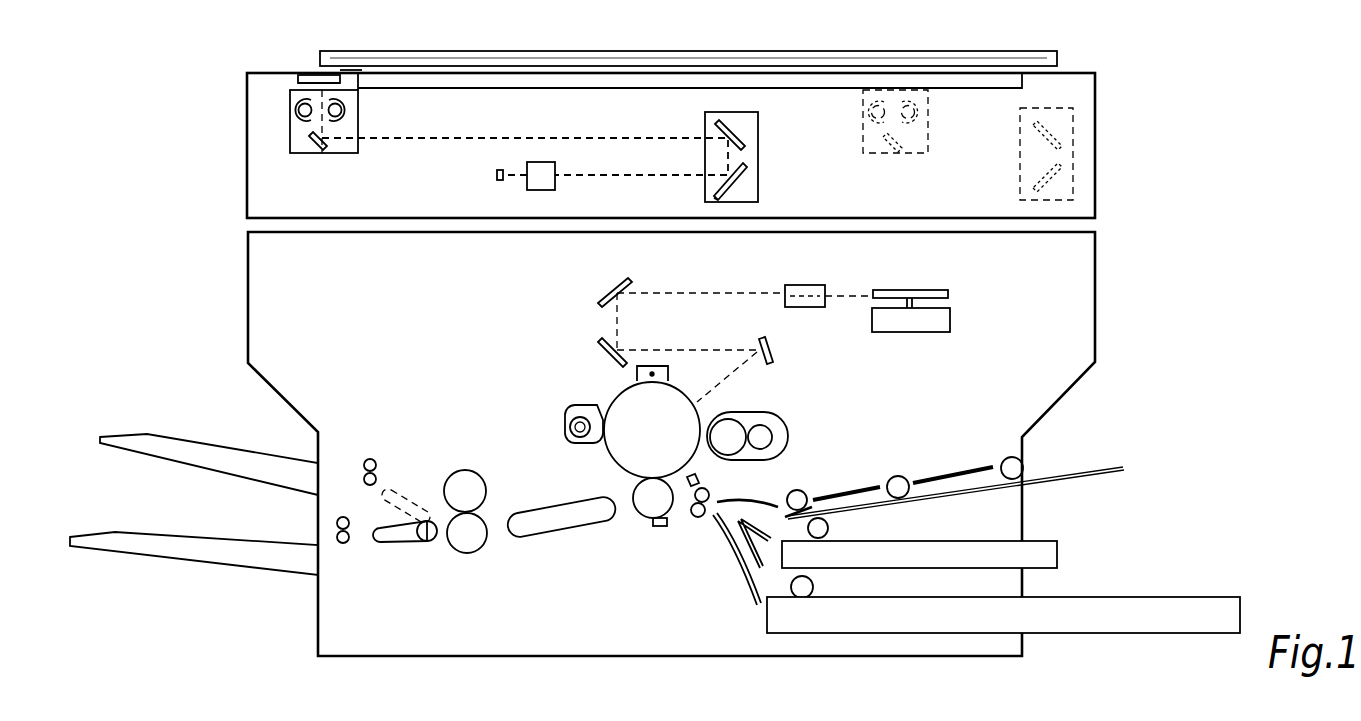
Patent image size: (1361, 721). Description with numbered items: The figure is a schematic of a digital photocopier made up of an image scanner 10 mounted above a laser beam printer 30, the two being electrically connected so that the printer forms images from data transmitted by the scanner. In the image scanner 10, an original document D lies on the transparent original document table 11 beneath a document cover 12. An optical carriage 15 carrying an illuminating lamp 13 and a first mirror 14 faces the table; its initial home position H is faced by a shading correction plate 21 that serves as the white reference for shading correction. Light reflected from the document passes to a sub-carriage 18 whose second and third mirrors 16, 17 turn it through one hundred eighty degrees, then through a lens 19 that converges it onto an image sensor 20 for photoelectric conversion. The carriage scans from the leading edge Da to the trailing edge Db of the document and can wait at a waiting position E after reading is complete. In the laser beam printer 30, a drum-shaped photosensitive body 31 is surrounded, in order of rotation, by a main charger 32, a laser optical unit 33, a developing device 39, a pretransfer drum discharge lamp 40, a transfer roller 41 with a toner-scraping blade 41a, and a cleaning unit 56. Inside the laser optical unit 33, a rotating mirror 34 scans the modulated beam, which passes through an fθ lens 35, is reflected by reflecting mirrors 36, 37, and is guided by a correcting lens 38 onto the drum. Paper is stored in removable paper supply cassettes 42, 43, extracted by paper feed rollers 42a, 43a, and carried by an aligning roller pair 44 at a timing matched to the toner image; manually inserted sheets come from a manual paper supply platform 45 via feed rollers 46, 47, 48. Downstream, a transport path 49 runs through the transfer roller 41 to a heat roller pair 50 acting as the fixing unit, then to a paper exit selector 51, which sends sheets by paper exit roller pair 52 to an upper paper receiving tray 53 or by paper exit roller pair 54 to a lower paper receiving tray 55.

The image scanner 10 is at (1095, 160).
The original document table 11 is at (990, 88).
The document cover 12 is at (640, 50).
The illuminating lamp 13 is at (290, 112).
The first mirror 14 is at (325, 151).
The optical carriage 15 is at (290, 138).
The second mirror 16 is at (738, 137).
The third mirror 17 is at (713, 197).
The sub-carriage 18 is at (760, 182).
The lens 19 is at (552, 192).
The image sensor 20 is at (497, 175).
The shading correction plate 21 is at (307, 74).
The laser beam printer 30 is at (1095, 330).
The photosensitive body 31 is at (610, 462).
The main charger 32 is at (637, 373).
The laser optical unit 33 is at (605, 315).
The rotating mirror 34 is at (920, 335).
The fθ lens 35 is at (808, 285).
The reflecting mirror 36 is at (622, 278).
The reflecting mirror 37 is at (600, 354).
The correcting lens 38 is at (775, 352).
The developing device 39 is at (778, 436).
The pretransfer drum discharge lamp 40 is at (699, 480).
The transfer roller 41 is at (645, 508).
The blade 41a is at (660, 526).
The paper supply cassette 42 is at (1057, 557).
The paper feed roller 42a is at (828, 528).
The paper supply cassette 43 is at (1145, 627).
The paper feed roller 43a is at (801, 598).
The aligning roller pair 44 is at (699, 517).
The manual paper supply platform 45 is at (1093, 463).
The feed roller 46 is at (1015, 460).
The feed roller 47 is at (905, 477).
The feed roller 48 is at (803, 491).
The transport path 49 is at (548, 530).
The heat roller pair 50 is at (470, 545).
The paper exit selector 51 is at (397, 542).
The paper exit roller pair 52 is at (372, 458).
The discharge tray 53 is at (217, 473).
The paper exit roller pair 54 is at (346, 547).
The lower paper receiving tray 55 is at (223, 565).
The cleaning unit 56 is at (566, 420).
The home position H is at (312, 74).
The original document D is at (680, 65).
The leading edge Da is at (362, 70).
The trailing edge Db is at (875, 70).
The waiting position E is at (910, 86).